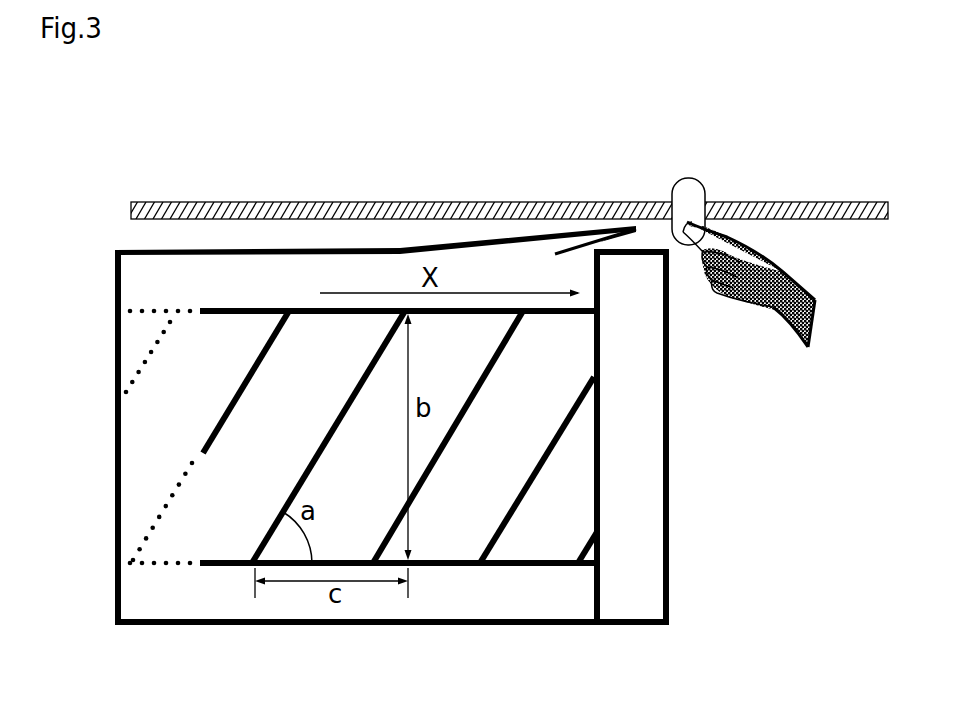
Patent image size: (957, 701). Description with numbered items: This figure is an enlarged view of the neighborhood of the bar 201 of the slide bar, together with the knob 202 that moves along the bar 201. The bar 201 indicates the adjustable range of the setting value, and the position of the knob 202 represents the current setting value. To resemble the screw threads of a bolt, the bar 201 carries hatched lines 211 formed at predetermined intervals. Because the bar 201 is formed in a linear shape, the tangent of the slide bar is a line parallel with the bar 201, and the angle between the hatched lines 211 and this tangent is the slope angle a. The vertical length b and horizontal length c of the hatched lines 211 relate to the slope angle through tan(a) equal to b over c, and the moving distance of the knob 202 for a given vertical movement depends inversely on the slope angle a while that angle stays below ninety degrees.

The bar 201 is at (848, 197).
The knob 202 is at (682, 181).
The hatched lines 211 is at (597, 392).